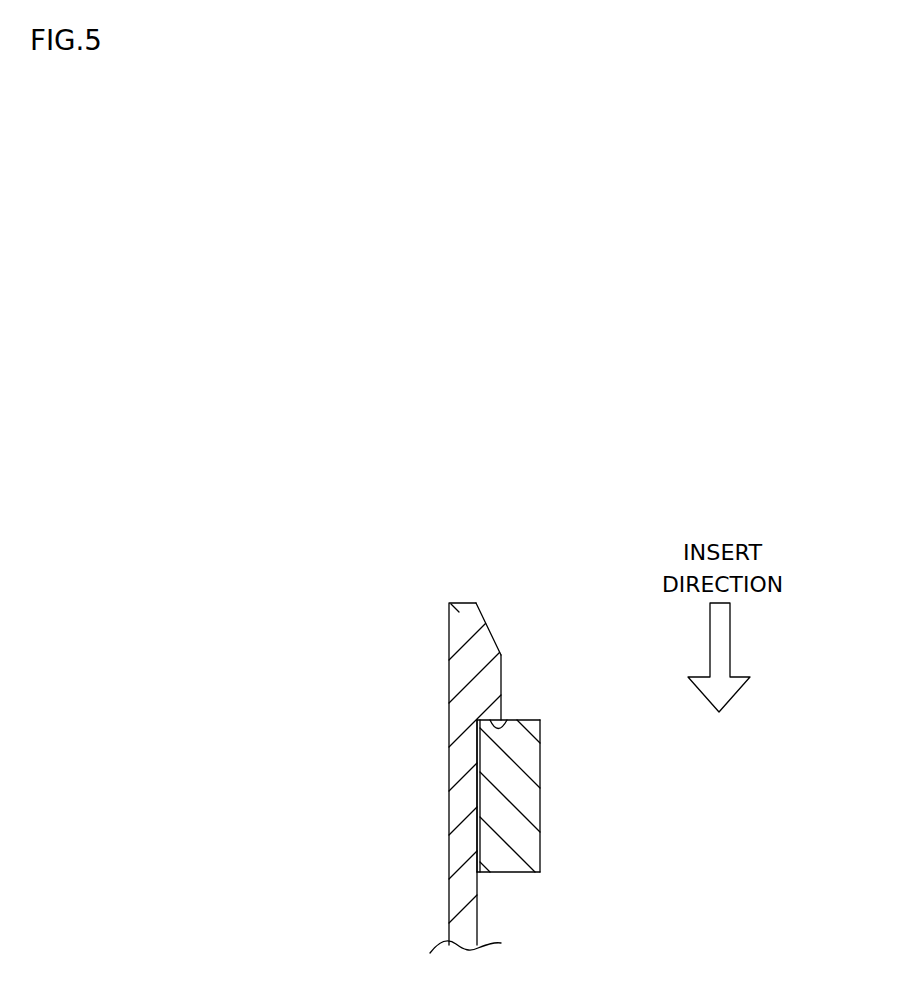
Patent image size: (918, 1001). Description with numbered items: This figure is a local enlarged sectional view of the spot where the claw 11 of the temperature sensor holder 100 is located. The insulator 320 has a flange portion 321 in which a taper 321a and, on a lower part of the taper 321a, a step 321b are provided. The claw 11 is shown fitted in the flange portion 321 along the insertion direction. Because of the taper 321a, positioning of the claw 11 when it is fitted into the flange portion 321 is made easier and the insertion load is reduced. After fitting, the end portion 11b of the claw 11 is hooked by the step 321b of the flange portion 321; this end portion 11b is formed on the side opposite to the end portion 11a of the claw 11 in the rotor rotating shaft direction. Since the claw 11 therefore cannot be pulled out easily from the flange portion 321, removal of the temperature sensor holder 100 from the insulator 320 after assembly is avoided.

The insulator 320 is at (410, 657).
The flange portion 321 is at (449, 722).
The taper 321a is at (490, 635).
The step 321b is at (508, 720).
The claw 11 is at (508, 820).
The end portion 11a is at (513, 873).
The end portion 11b is at (530, 720).
The temperature sensor holder 100 is at (708, 825).